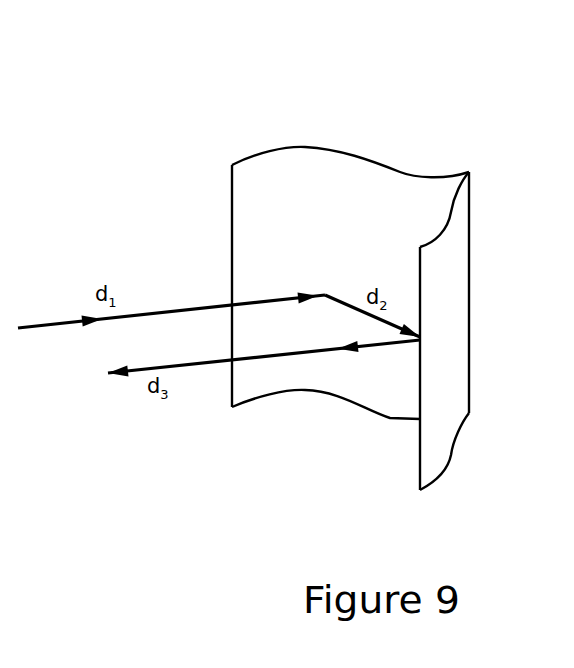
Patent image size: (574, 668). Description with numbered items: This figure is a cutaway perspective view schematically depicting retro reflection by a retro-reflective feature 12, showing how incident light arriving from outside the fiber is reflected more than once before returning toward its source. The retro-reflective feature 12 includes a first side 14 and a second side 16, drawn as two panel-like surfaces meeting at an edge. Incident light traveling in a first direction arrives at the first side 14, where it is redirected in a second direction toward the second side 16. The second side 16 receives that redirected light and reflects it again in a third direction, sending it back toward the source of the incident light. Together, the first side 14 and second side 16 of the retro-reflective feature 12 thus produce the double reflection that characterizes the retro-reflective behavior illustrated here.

The retro-reflective feature 12 is at (228, 84).
The first side 14 is at (345, 153).
The second side 16 is at (452, 211).